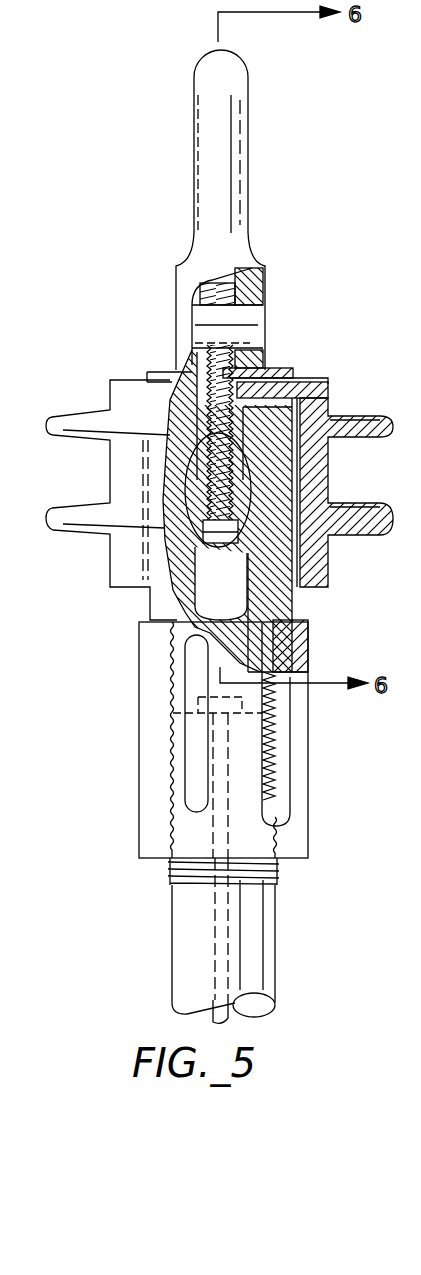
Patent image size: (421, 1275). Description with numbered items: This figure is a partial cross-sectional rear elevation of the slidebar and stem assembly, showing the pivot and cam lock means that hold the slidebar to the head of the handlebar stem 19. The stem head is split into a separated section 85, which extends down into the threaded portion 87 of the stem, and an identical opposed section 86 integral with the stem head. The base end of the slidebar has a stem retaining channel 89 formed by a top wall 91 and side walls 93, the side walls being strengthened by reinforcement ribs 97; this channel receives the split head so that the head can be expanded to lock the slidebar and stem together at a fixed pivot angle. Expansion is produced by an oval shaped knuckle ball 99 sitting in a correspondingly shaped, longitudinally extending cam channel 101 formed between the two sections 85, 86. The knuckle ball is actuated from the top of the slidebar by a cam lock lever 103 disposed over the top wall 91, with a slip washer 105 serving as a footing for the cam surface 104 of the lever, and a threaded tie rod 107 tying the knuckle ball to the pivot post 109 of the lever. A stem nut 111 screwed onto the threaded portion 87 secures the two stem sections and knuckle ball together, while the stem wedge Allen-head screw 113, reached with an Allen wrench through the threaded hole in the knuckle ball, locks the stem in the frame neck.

The handlebar stem 19 is at (267, 937).
The separated section 85 is at (177, 597).
The opposed section 86 is at (287, 598).
The threaded portion 87 is at (160, 678).
The stem retaining channel 89 is at (292, 401).
The top wall 91 is at (308, 383).
The side walls 93 is at (118, 484).
The reinforcement ribs 97 is at (386, 438).
The knuckle ball 99 is at (173, 537).
The cam channel 101 is at (262, 556).
The cam lock lever 103 is at (240, 190).
The cam surface 104 is at (262, 365).
The slip washer 105 is at (163, 368).
The threaded tie rod 107 is at (145, 373).
The pivot post 109 is at (255, 322).
The stem nut 111 is at (300, 773).
The stem wedge Allen-head screw 113 is at (172, 722).